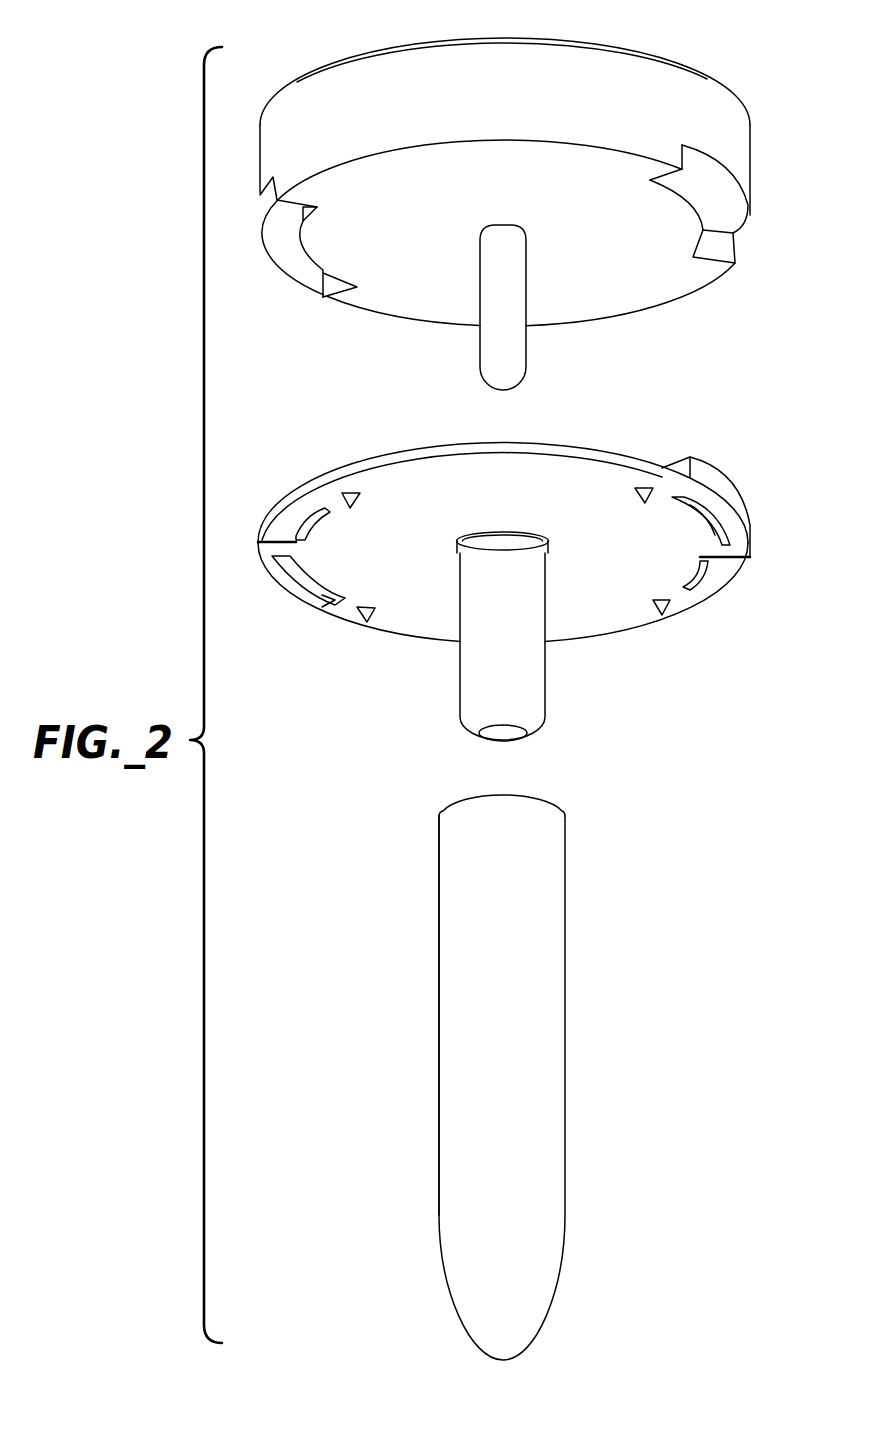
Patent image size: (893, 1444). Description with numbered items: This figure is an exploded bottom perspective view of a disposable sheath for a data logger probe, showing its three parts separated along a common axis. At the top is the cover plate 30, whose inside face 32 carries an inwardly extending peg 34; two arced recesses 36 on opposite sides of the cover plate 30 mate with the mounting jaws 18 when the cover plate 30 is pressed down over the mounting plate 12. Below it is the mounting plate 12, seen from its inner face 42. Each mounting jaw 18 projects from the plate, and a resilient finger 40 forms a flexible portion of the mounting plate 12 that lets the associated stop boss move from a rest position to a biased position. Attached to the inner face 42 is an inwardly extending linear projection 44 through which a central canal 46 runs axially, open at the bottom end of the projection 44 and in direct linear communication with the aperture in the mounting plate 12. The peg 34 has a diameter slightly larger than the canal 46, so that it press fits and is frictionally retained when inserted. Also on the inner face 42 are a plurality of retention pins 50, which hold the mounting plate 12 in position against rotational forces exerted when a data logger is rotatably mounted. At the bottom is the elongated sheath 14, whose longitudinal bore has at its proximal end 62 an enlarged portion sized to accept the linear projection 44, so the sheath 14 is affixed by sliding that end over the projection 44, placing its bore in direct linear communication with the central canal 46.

The mounting plate 12 is at (424, 445).
The elongated sheath 14 is at (568, 903).
The mounting jaw 18 is at (727, 472).
The cover plate 30 is at (628, 47).
The inside face 32 is at (516, 199).
The peg 34 is at (522, 340).
The arced recesses 36 is at (731, 203).
The resilient finger 40 is at (728, 573).
The inner face 42 is at (516, 512).
The linear projection 44 is at (530, 663).
The central canal 46 is at (500, 738).
The retention pins 50 is at (350, 490).
The proximal end 62 is at (453, 910).